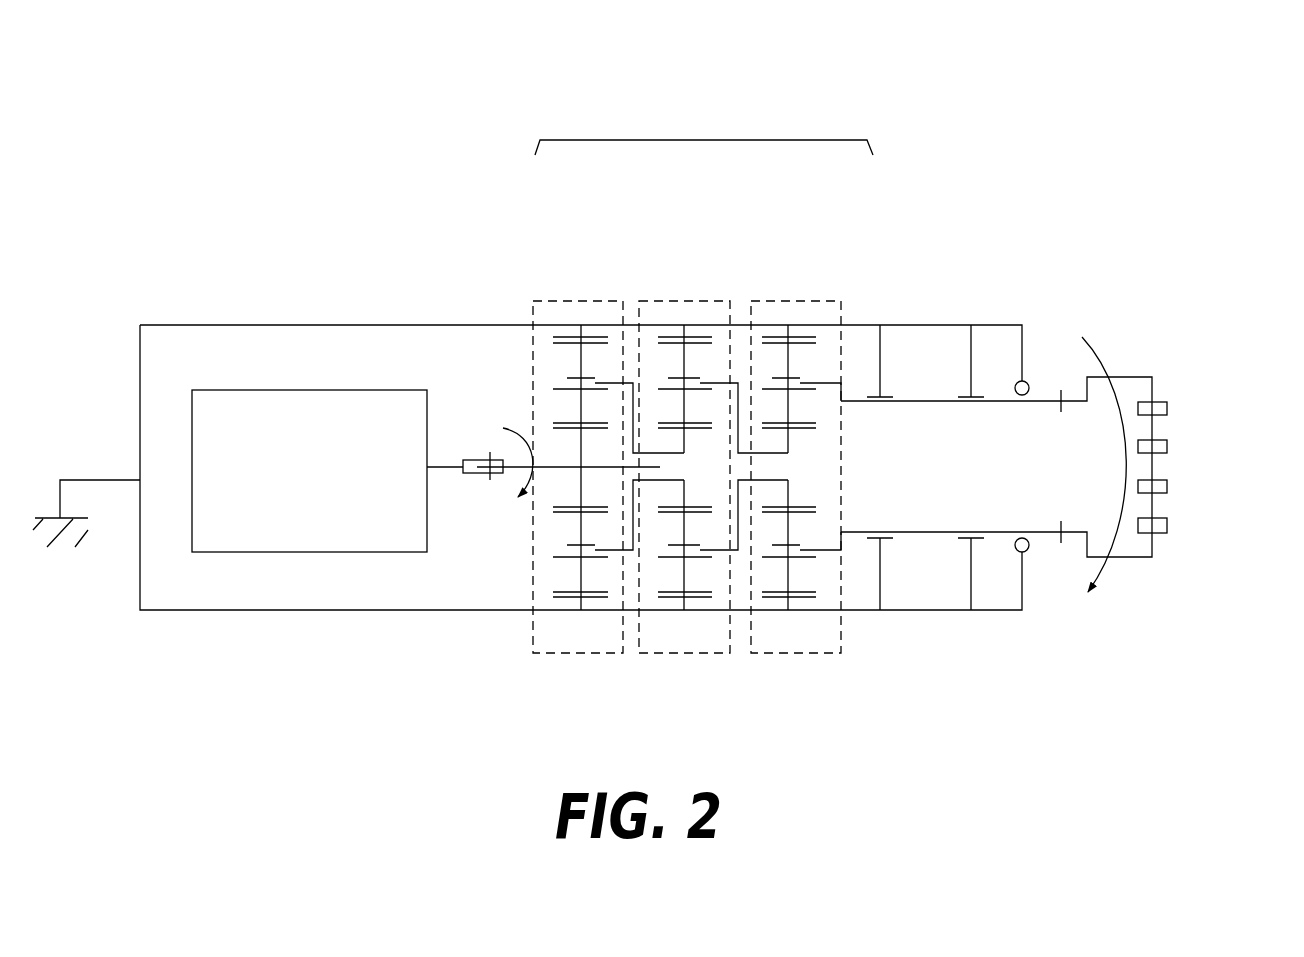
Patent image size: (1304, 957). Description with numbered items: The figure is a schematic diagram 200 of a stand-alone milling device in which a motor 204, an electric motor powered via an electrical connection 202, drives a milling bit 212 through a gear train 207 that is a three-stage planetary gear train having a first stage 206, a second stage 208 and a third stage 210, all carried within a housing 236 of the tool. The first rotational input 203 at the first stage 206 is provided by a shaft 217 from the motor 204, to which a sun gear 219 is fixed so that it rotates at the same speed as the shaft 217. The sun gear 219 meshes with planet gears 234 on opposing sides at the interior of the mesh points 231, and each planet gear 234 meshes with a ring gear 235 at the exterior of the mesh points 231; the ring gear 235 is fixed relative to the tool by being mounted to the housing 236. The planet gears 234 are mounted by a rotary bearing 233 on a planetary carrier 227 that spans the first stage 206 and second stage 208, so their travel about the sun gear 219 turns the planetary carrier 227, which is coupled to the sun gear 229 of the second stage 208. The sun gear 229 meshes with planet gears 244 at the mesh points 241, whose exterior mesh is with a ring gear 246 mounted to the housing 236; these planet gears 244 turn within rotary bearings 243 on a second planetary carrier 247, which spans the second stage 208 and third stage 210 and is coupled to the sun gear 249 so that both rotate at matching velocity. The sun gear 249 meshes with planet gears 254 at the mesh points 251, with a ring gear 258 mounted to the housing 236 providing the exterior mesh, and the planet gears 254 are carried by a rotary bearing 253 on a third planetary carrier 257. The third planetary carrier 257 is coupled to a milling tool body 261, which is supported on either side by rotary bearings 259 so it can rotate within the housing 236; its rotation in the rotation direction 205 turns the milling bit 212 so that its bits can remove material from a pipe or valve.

The diagram 200 is at (92, 198).
The electrical connection 202 is at (83, 480).
The first rotational input 203 is at (506, 427).
The motor 204 is at (245, 397).
The rotation direction 205 is at (1097, 343).
The first stage 206 is at (598, 300).
The gear train 207 is at (703, 140).
The second stage 208 is at (722, 300).
The third stage 210 is at (830, 300).
The milling bit 212 is at (1177, 458).
The shaft 217 is at (510, 473).
The sun gear 219 is at (570, 475).
The planetary carrier 227 is at (648, 490).
The sun gear 229 is at (683, 483).
The mesh points 231 is at (547, 332).
The rotary bearing 233 is at (573, 557).
The planet gears 234 is at (577, 574).
The ring gear 235 is at (573, 603).
The housing 236 is at (315, 611).
The mesh points 241 is at (670, 413).
The rotary bearings 243 is at (682, 562).
The planet gears 244 is at (682, 357).
The ring gear 246 is at (691, 600).
The second planetary carrier 247 is at (720, 557).
The sun gear 249 is at (786, 458).
The mesh points 251 is at (773, 413).
The rotary bearing 253 is at (783, 558).
The planet gears 254 is at (785, 577).
The third planetary carrier 257 is at (825, 560).
The ring gear 258 is at (795, 603).
The rotary bearings 259 is at (887, 540).
The milling tool body 261 is at (1007, 540).